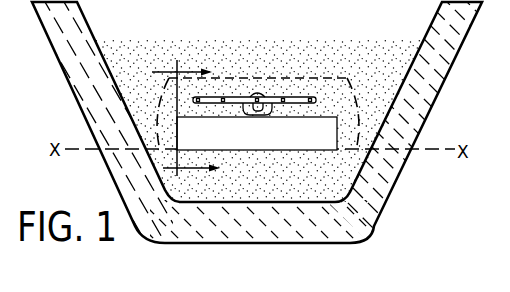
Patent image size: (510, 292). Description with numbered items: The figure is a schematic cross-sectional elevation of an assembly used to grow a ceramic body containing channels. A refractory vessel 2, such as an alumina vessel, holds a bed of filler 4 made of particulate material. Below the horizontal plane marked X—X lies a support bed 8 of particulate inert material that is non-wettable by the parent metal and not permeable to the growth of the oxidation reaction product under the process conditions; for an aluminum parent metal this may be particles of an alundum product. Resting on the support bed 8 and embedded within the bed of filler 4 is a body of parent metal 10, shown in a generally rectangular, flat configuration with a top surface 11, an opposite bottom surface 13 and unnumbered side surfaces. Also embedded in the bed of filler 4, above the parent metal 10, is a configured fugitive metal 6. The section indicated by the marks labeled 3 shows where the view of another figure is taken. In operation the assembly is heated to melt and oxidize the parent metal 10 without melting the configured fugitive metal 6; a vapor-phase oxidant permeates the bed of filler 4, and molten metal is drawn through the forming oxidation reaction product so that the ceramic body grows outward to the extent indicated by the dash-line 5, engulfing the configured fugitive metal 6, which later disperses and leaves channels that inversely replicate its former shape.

The refractory vessel 2 is at (420, 97).
The section line 3 is at (186, 120).
The bed of filler 4 is at (337, 76).
The dash-line 5 is at (287, 78).
The configured fugitive metal 6 is at (254, 90).
The support bed 8 is at (333, 173).
The parent metal 10 is at (219, 140).
The top surface 11 is at (310, 117).
The bottom surface 13 is at (283, 150).